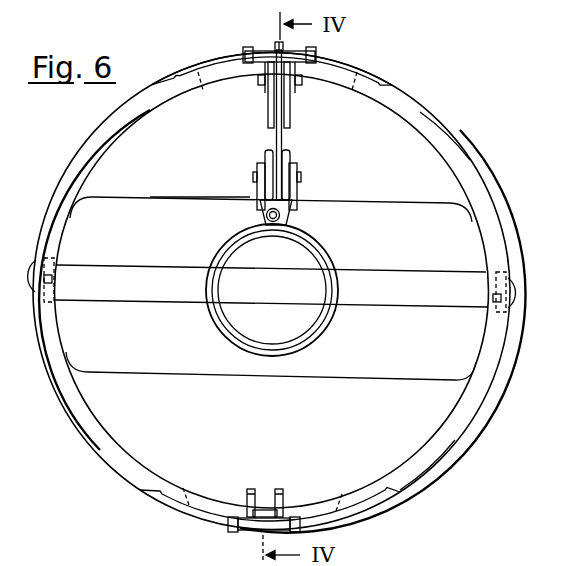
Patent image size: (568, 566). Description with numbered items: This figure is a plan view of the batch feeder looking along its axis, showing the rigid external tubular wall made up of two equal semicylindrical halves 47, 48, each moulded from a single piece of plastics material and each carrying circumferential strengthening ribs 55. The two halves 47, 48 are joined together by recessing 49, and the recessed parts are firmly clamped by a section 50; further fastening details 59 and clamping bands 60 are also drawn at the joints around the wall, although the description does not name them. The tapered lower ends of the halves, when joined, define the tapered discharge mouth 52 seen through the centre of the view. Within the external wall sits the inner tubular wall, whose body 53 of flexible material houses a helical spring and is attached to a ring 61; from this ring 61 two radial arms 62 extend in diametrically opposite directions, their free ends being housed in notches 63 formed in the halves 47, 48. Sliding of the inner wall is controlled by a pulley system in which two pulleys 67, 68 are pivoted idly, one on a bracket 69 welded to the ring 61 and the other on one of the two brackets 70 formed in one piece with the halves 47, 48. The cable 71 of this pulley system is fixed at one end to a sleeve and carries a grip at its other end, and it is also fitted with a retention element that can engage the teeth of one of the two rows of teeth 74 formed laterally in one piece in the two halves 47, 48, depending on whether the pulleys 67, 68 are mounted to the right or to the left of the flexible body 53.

The semicylindrical half 47 is at (454, 163).
The semicylindrical half 48 is at (431, 447).
The recessing 49 is at (56, 284).
The section 50 is at (30, 284).
The tapered discharge mouth 52 is at (181, 214).
The body of flexible material 53 is at (313, 242).
The circumferential strengthening ribs 55 is at (476, 180).
The pin 59 is at (203, 90).
The arcuate clamp band 60 is at (346, 63).
The ring 61 is at (331, 251).
The radial arms 62 is at (157, 290).
The notches 63 is at (44, 304).
The pulley 67 is at (291, 155).
The pulley 68 is at (284, 100).
The bracket 69 is at (298, 190).
The brackets 70 is at (263, 86).
The cable 71 is at (275, 128).
The rows of teeth 74 is at (233, 530).